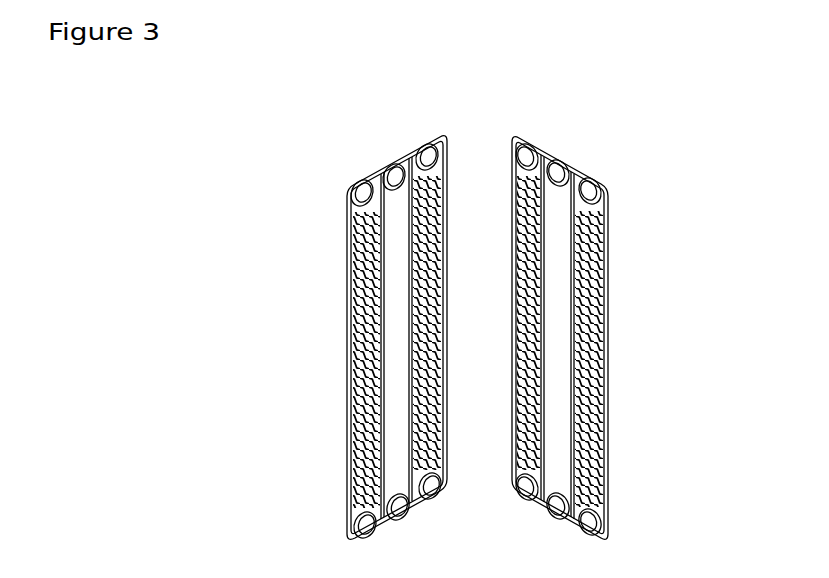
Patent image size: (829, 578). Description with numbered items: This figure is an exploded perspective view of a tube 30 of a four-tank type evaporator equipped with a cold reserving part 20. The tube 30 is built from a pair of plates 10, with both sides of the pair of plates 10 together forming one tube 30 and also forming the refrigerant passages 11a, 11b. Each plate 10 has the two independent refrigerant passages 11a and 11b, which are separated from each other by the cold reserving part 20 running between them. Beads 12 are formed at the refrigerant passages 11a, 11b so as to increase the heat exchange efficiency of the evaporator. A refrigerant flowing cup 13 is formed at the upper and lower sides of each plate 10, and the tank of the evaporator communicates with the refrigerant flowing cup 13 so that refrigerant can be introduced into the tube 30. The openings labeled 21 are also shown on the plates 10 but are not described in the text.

The tube 30 is at (563, 96).
The plate 10 is at (347, 242).
The refrigerant passage 11a is at (354, 290).
The refrigerant passage 11b is at (512, 275).
The bead 12 is at (355, 354).
The refrigerant flowing cup 13 is at (364, 178).
The cold reserving part 20 is at (385, 324).
The flow opening 21 is at (557, 168).